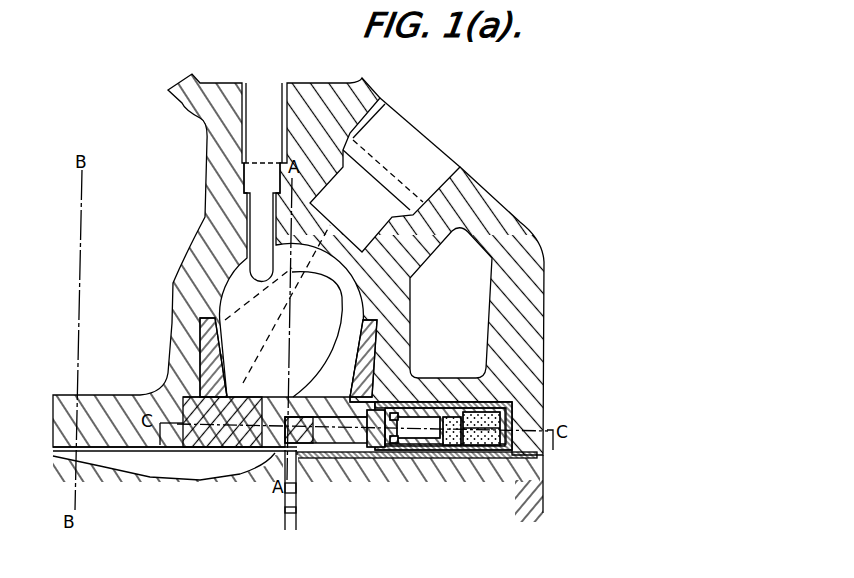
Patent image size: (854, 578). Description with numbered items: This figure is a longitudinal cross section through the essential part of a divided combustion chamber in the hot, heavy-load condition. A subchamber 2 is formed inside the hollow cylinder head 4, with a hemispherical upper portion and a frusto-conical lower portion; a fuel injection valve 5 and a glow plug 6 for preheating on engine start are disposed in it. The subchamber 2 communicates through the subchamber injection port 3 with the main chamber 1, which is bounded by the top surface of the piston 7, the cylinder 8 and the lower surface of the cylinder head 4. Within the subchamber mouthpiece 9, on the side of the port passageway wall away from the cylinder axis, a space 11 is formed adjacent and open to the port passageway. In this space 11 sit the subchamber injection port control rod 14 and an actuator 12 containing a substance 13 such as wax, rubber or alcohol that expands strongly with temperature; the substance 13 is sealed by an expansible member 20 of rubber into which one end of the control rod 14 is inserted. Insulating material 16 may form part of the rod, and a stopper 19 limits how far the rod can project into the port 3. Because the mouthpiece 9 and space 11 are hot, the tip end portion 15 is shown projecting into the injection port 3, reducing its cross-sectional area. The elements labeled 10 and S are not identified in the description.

The main chamber 1 is at (153, 460).
The subchamber 2 is at (360, 307).
The subchamber injection port 3 is at (170, 363).
The cylinder head 4 is at (195, 267).
The fuel injection valve 5 is at (433, 170).
The glow plug 6 is at (263, 98).
The piston 7 is at (197, 490).
The cylinder 8 is at (305, 512).
The subchamber mouthpiece 9 is at (360, 365).
The cover plate 10 is at (540, 458).
The space 11 is at (407, 467).
The actuator 12 is at (383, 470).
The substance 13 is at (467, 457).
The subchamber injection port control rod 14 is at (333, 467).
The tip end portion 15 is at (267, 478).
The insulating material 16 is at (370, 467).
The stopper 19 is at (372, 473).
The expansible member 20 is at (427, 467).
The swirl chamber S is at (332, 295).